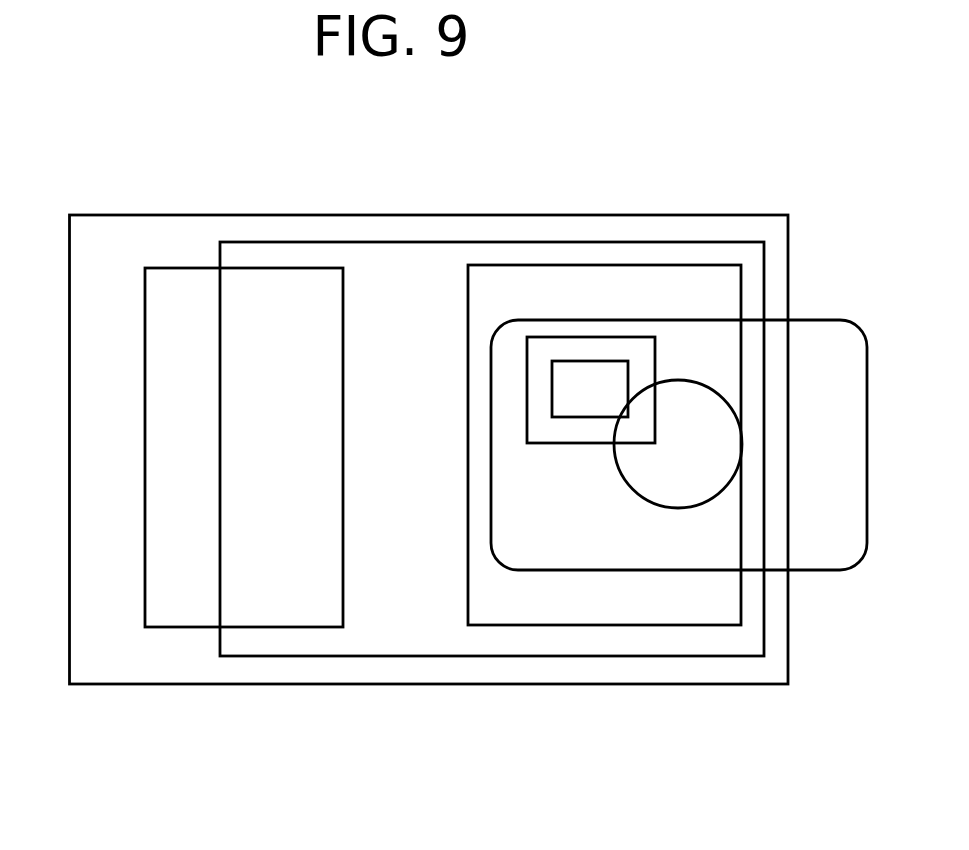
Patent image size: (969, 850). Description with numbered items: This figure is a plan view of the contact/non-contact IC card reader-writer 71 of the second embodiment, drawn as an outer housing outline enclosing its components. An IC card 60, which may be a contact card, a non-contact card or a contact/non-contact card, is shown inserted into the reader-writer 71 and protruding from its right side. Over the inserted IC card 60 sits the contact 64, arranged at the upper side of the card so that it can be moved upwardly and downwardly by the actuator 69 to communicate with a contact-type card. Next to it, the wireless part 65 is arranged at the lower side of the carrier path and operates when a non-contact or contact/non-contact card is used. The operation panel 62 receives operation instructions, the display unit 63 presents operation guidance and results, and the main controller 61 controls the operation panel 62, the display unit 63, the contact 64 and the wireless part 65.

The contact/non-contact IC card reader-writer 71 is at (716, 208).
The main controller 61 is at (412, 656).
The display unit 63 is at (167, 627).
The operation panel 62 is at (565, 625).
The IC card 60 is at (700, 570).
The actuator 69 is at (587, 337).
The contact 64 is at (555, 361).
The wireless part 65 is at (672, 380).